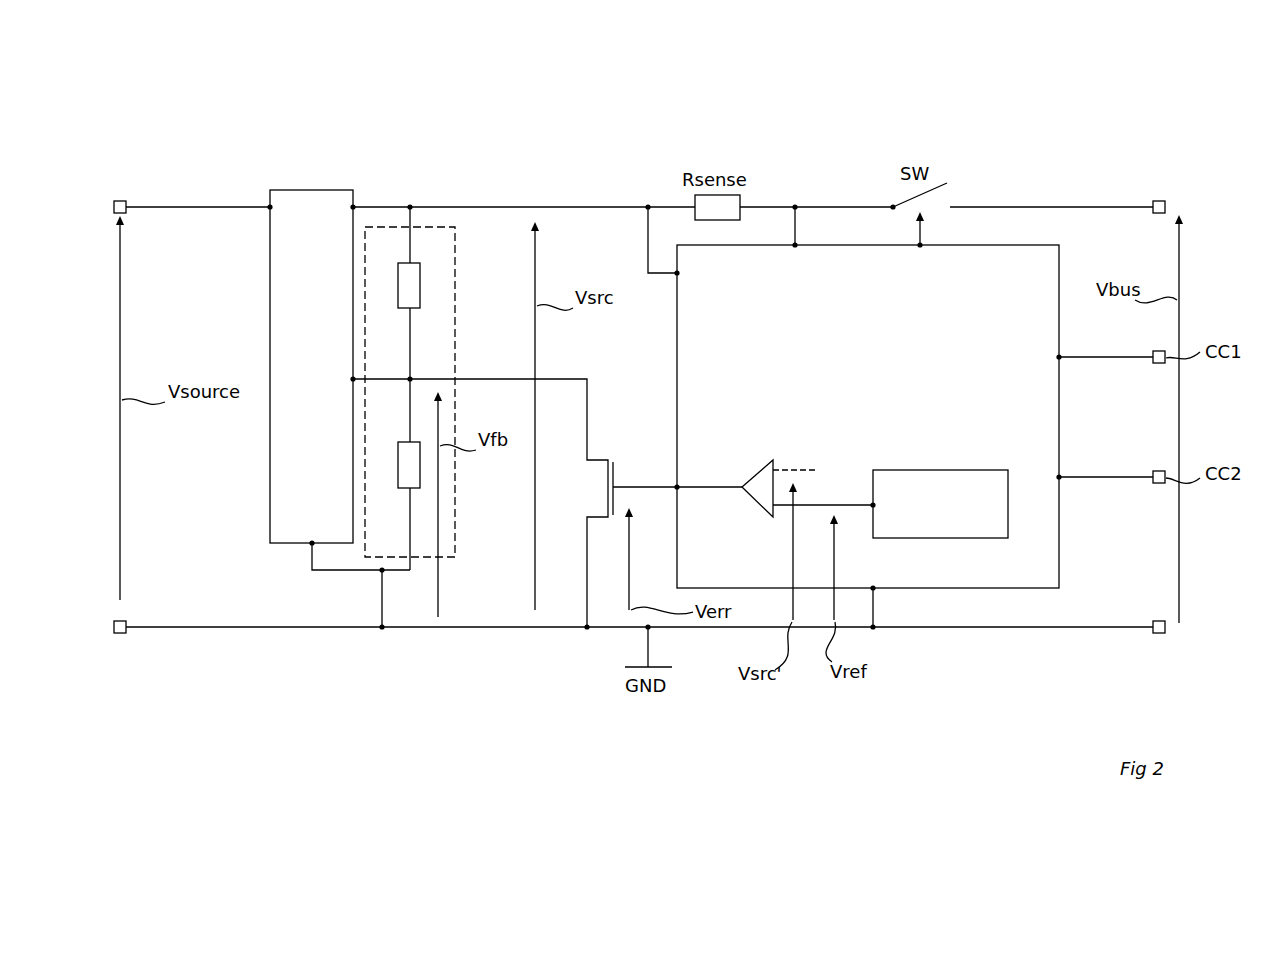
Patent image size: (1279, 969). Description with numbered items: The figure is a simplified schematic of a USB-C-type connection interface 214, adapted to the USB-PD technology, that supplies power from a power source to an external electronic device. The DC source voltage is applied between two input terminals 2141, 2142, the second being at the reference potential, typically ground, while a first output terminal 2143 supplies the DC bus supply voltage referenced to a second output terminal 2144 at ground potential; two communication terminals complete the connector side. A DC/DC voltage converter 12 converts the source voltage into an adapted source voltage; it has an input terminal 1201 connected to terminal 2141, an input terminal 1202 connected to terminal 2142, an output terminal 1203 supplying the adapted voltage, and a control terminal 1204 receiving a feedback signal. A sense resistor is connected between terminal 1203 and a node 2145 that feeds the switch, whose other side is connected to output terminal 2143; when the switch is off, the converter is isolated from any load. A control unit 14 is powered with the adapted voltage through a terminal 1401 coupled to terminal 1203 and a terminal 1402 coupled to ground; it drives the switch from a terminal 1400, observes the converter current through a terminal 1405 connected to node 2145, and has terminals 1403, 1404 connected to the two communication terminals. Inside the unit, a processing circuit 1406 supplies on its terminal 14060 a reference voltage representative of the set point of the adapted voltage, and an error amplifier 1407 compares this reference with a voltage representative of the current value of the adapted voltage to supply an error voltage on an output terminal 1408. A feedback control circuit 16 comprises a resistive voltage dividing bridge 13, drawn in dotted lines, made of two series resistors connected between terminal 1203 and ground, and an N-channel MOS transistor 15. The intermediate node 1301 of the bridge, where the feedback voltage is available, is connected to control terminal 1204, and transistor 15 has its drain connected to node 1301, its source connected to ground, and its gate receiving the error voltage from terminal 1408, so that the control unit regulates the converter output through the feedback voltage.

The USB-C-type connection interface 214 is at (552, 97).
The input terminal 2141 is at (119, 200).
The input terminal 2142 is at (122, 634).
The first output terminal 2143 is at (1160, 200).
The second output terminal 2144 is at (1160, 634).
The node 2145 is at (795, 204).
The voltage converter 12 is at (332, 188).
The input terminal 1201 is at (268, 205).
The input terminal 1202 is at (310, 545).
The output terminal 1203 is at (355, 205).
The control terminal 1204 is at (351, 381).
The voltage dividing bridge 13 is at (442, 220).
The intermediate node 1301 is at (411, 377).
The control unit 14 is at (1070, 266).
The terminal 1400 is at (922, 250).
The terminal 1401 is at (680, 275).
The terminal 1402 is at (876, 590).
The terminal 1403 is at (1061, 359).
The terminal 1404 is at (1061, 480).
The terminal 1405 is at (797, 248).
The processing circuit 1406 is at (941, 460).
The terminal 14060 is at (871, 503).
The error amplifier 1407 is at (762, 452).
The output terminal 1408 is at (679, 485).
The transistor 15 is at (605, 450).
The feedback control circuit 16 is at (470, 648).